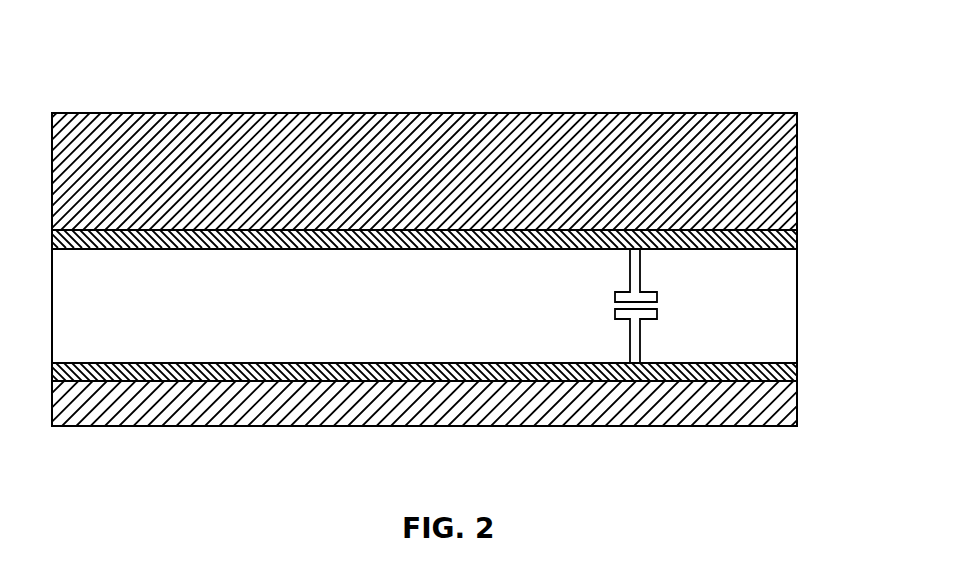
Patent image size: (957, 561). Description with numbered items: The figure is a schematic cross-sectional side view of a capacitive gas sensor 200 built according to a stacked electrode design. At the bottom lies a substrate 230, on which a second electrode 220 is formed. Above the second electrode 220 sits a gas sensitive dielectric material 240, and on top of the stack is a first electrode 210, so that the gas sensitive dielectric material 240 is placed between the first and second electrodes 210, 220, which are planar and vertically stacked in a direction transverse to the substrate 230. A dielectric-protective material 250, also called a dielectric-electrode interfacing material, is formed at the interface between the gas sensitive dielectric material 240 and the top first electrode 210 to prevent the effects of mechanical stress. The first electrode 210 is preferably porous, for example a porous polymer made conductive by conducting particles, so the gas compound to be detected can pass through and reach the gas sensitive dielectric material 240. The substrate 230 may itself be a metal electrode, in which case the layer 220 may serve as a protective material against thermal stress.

The capacitive gas sensor 200 is at (777, 70).
The first electrode 210 is at (783, 185).
The dielectric-protective material 250 is at (783, 243).
The gas sensitive dielectric material 240 is at (778, 323).
The second electrode 220 is at (783, 376).
The substrate 230 is at (750, 405).